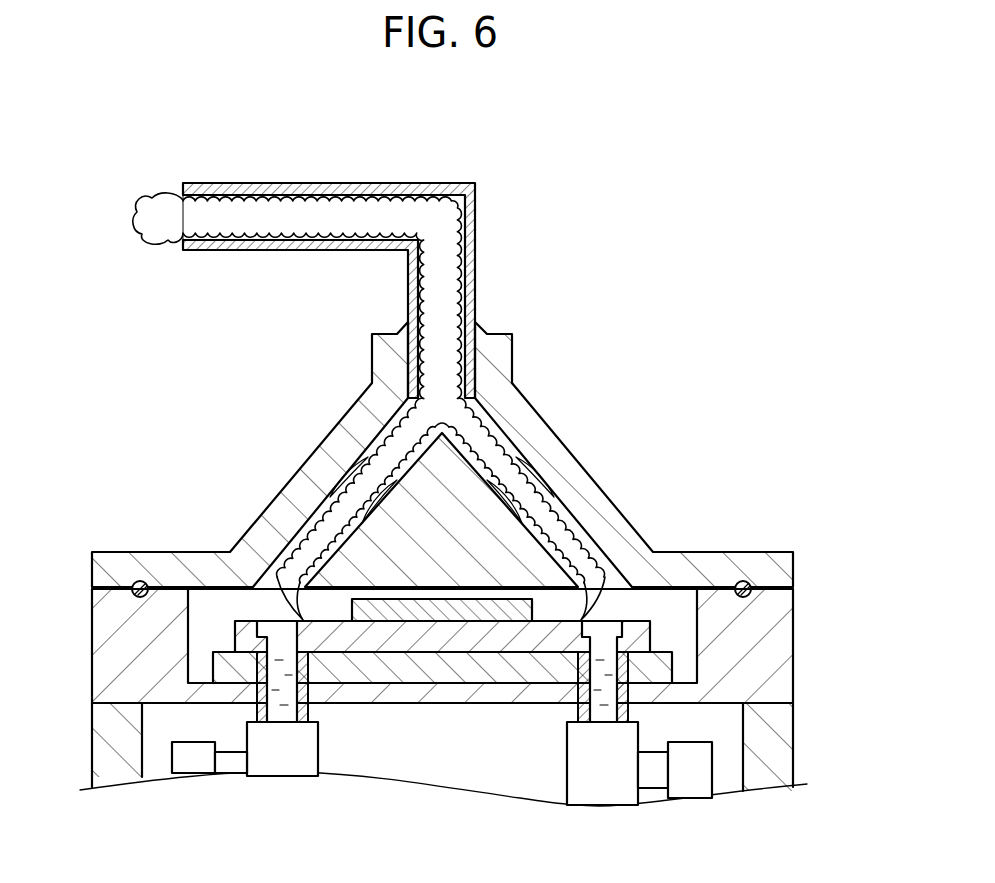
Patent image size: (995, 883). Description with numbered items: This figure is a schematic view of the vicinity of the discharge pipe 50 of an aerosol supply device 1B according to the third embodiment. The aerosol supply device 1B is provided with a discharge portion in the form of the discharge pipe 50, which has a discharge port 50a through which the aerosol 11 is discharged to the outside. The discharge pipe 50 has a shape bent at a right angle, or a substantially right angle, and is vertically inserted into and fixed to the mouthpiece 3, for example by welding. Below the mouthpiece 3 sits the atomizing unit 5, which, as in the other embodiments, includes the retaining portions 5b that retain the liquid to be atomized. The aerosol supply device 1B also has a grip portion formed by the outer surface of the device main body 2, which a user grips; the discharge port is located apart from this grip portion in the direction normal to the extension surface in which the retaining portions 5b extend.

The aerosol supply device 1B is at (609, 206).
The device main body 2 is at (794, 753).
The mouthpiece 3 is at (567, 447).
The atomizing unit 5 is at (213, 622).
The retaining portion 5b is at (619, 630).
The aerosol 11 is at (142, 236).
The discharge pipe 50 is at (333, 183).
The discharge port 50a is at (181, 196).